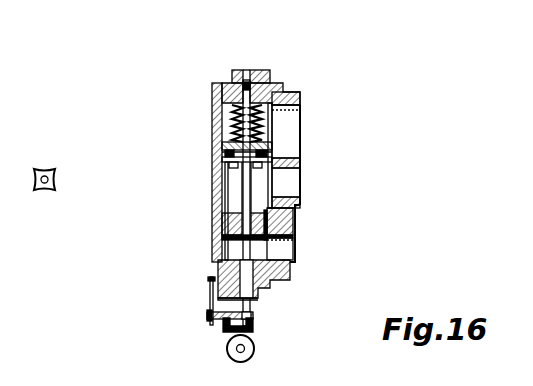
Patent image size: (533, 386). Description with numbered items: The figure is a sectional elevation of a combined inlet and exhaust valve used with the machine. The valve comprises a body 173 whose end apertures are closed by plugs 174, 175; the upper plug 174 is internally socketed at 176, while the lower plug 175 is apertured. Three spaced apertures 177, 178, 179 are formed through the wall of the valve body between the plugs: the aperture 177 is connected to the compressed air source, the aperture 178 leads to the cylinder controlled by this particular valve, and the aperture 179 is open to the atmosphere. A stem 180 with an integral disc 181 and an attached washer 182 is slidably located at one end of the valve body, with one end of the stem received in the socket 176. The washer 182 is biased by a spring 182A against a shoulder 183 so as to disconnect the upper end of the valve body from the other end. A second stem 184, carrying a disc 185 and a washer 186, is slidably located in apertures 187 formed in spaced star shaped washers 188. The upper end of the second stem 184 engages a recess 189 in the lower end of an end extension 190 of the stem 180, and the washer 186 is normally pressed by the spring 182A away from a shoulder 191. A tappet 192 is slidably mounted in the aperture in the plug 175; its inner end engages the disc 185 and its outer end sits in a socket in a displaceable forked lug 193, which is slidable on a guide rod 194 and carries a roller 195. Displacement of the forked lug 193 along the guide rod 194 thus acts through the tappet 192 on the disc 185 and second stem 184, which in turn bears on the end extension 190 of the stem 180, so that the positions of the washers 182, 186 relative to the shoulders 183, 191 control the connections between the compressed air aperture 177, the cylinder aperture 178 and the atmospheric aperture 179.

The body 173 is at (208, 109).
The plug 174 is at (278, 82).
The plug 175 is at (283, 290).
The socket 176 is at (263, 70).
The aperture 177 is at (303, 123).
The aperture 178 is at (300, 200).
The aperture 179 is at (296, 250).
The stem 180 is at (224, 128).
The disc 181 is at (222, 146).
The washer 182 is at (225, 166).
The spring 182A is at (302, 108).
The shoulder 183 is at (222, 182).
The second stem 184 is at (300, 177).
The disc 185 is at (218, 262).
The washer 186 is at (222, 236).
The apertures 187 is at (57, 177).
The star shaped washers 188 is at (222, 210).
The recess 189 is at (302, 144).
The end extension 190 is at (302, 164).
The shoulder 191 is at (296, 210).
The tappet 192 is at (260, 317).
The forked lug 193 is at (252, 323).
The guide rod 194 is at (208, 322).
The roller 195 is at (228, 351).